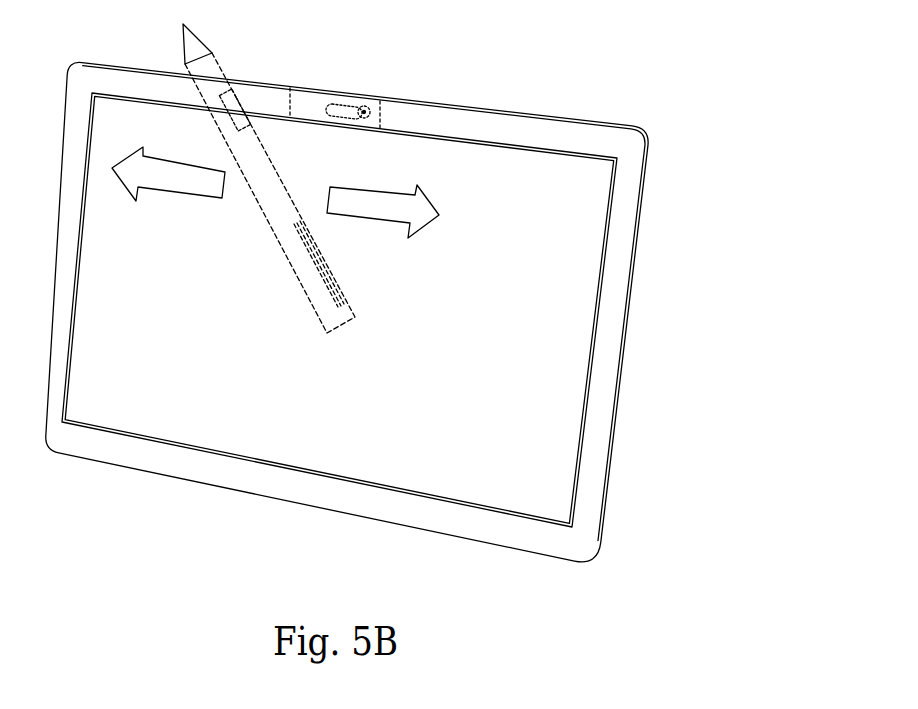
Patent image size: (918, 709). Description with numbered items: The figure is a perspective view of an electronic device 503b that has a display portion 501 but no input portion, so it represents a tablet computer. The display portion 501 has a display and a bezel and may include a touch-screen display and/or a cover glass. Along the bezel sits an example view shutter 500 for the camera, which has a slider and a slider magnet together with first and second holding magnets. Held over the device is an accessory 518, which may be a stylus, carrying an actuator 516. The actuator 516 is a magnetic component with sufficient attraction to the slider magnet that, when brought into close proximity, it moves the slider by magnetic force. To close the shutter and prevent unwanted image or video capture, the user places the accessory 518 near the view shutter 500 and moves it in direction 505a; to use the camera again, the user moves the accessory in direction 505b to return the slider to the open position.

The view shutter 500 is at (388, 93).
The display portion 501 is at (645, 246).
The electronic device 503b is at (731, 487).
The direction 505a is at (367, 210).
The direction 505b is at (197, 175).
The actuator 516 is at (232, 100).
The accessory 518 is at (315, 288).